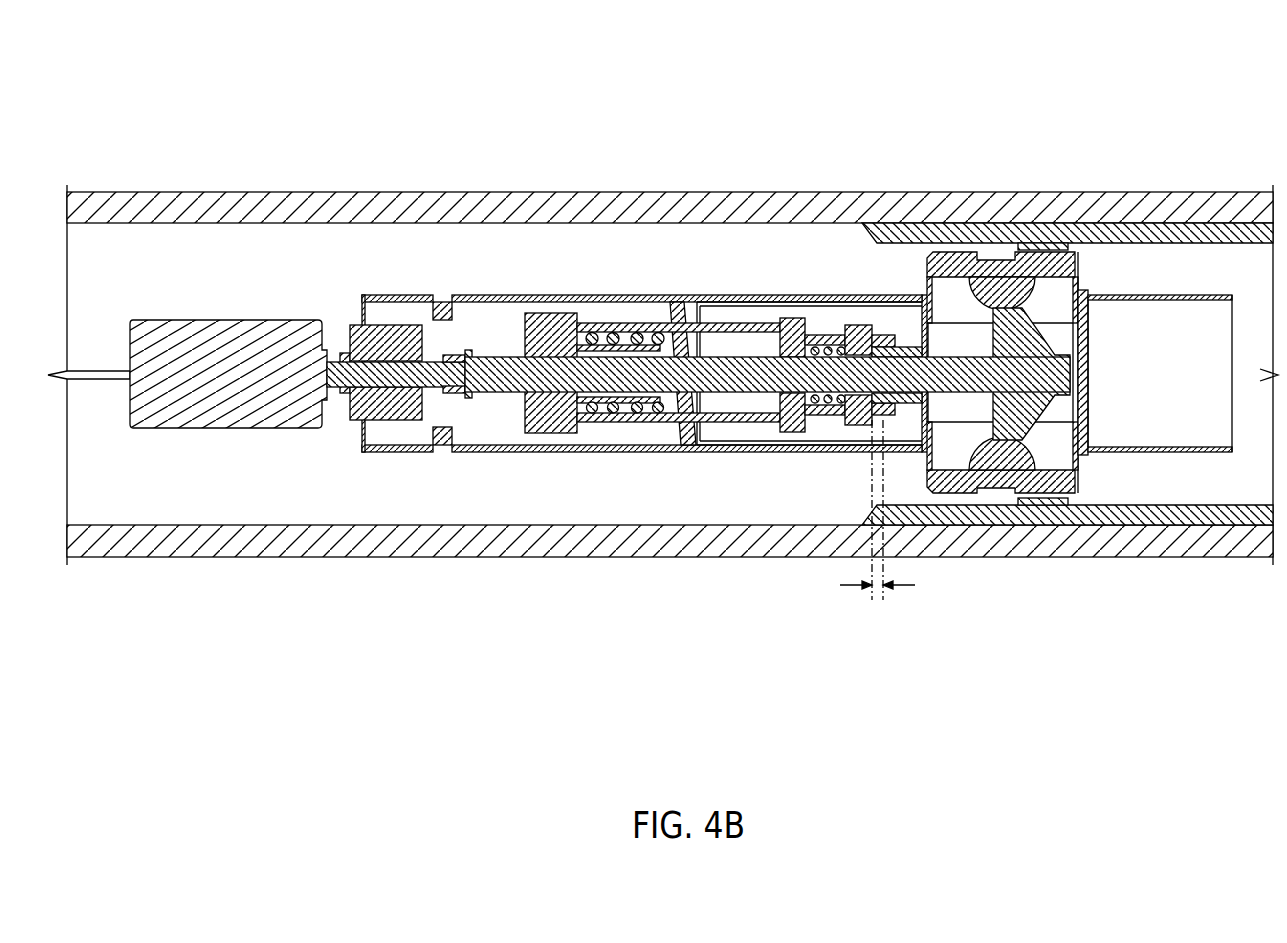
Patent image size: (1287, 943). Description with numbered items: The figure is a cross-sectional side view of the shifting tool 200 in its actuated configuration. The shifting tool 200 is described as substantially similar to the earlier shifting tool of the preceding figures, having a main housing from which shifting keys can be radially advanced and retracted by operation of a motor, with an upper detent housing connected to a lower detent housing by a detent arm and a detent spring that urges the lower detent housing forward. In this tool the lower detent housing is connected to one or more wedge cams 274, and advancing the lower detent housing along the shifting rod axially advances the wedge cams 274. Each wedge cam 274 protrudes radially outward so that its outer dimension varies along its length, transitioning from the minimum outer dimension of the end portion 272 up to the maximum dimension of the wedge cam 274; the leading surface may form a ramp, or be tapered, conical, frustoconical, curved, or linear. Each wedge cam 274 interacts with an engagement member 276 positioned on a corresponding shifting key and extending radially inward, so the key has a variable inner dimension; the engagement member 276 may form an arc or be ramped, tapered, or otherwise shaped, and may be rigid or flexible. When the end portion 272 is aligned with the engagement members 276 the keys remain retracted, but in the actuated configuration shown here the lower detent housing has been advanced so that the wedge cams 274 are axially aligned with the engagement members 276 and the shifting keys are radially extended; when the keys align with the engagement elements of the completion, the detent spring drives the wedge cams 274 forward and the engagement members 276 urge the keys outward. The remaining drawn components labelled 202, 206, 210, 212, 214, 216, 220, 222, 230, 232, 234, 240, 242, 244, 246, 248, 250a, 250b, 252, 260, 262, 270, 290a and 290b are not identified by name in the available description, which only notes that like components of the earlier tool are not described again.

The shifting tool 200 is at (312, 256).
The actuation rod 202 is at (97, 371).
The tubular member 206 is at (340, 192).
The tool housing 210 is at (255, 58).
The housing section 212 is at (648, 298).
The plate 214 is at (681, 302).
The sleeve 216 is at (745, 300).
The mass 220 is at (182, 320).
The collar 222 is at (337, 395).
The block 230 is at (395, 325).
The inner wall layer 232 is at (440, 427).
The shaft 234 is at (480, 395).
The biasing assembly 240 is at (647, 381).
The piston 242 is at (548, 433).
The springs 244 is at (593, 330).
The flange 246 is at (805, 318).
The seal carrier 248 is at (850, 325).
The upper latch body 250a is at (980, 322).
The lower latch body 250b is at (893, 440).
The gap 252 is at (840, 585).
The upper rail 260 is at (633, 323).
The lower rail 262 is at (790, 430).
The nut 270 is at (880, 347).
The end portion 272 is at (1060, 370).
The wedge cam 274 is at (1015, 262).
The engagement member 276 is at (1005, 296).
The upper recess 290a is at (960, 258).
The lower recess 290b is at (962, 498).